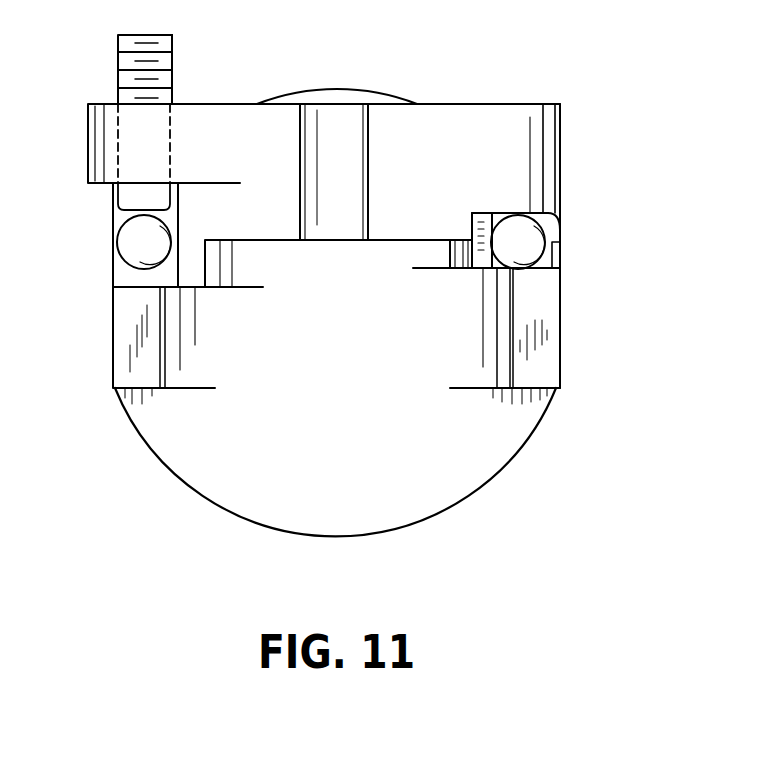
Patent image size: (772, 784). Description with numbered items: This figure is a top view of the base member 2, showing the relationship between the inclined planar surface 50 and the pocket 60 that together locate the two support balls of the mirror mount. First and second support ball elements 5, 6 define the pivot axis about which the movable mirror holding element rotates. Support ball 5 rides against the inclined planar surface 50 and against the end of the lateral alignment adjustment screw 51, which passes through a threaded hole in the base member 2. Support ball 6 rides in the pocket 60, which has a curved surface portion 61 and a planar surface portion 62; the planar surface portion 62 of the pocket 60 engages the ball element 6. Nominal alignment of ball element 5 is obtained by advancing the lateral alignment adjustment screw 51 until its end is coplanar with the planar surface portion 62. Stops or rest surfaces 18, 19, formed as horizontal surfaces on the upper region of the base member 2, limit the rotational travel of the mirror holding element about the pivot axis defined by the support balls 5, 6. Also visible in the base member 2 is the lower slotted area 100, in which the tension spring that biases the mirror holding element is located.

The base member 2 is at (495, 452).
The first support ball element 5 is at (130, 238).
The second support ball element 6 is at (520, 248).
The stop or rest surface 18 is at (122, 303).
The stop or rest surface 19 is at (547, 347).
The inclined planar surface 50 is at (122, 267).
The lateral alignment adjustment screw 51 is at (124, 60).
The pocket 60 is at (567, 243).
The curved surface portion 61 is at (497, 212).
The planar surface portion 62 is at (553, 215).
The lower slotted area 100 is at (342, 125).